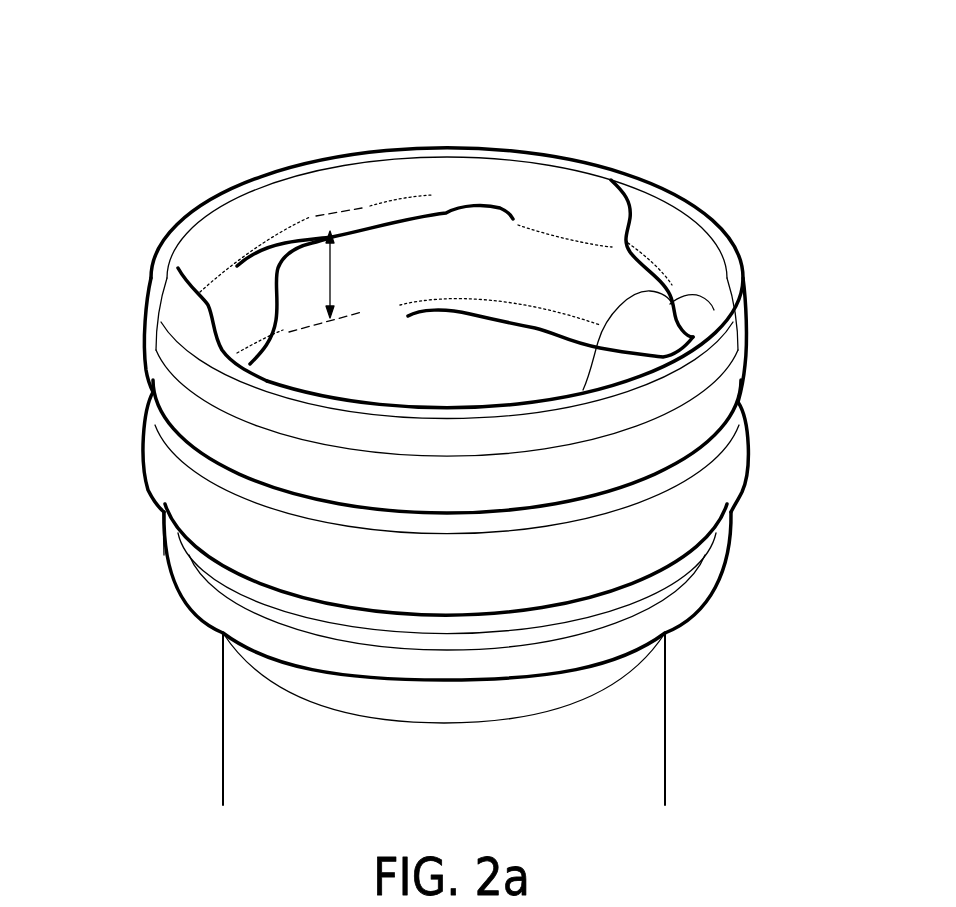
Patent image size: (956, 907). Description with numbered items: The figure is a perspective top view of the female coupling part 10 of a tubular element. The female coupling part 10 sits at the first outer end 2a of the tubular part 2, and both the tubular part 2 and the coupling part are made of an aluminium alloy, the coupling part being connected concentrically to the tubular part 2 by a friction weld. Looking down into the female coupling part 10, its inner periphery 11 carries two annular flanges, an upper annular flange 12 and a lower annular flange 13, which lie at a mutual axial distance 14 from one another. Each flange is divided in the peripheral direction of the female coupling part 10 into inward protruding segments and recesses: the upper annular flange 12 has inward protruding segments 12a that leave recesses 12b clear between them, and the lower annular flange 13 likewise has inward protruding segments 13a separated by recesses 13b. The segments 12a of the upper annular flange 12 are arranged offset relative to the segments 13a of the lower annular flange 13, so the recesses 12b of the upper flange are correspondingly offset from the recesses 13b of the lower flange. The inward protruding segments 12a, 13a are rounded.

The female coupling part 10 is at (102, 114).
The tubular part 2 is at (665, 795).
The first outer end 2a is at (665, 683).
The inner periphery 11 is at (507, 182).
The upper annular flange 12 is at (738, 254).
The inward protruding segments 12a is at (197, 312).
The recesses 12b is at (207, 250).
The lower annular flange 13 is at (445, 262).
The inward protruding segments 13a is at (556, 283).
The recesses 13b is at (400, 283).
The mutual axial distance 14 is at (329, 279).